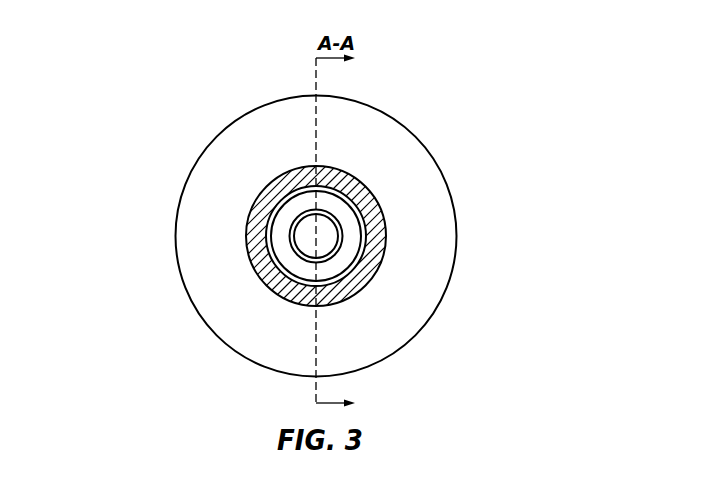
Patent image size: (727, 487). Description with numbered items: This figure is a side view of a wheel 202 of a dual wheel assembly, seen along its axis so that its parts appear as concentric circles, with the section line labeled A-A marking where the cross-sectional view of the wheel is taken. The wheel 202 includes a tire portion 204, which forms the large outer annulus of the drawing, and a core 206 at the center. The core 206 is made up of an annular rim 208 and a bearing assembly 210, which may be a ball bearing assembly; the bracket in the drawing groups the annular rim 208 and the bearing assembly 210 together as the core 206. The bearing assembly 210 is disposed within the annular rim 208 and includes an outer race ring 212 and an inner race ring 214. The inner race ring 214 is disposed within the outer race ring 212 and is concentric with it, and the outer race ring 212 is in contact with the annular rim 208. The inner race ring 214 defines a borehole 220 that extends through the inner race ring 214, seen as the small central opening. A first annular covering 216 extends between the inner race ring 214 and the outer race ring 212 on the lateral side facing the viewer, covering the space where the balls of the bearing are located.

The wheel 202 is at (213, 127).
The tire portion 204 is at (263, 132).
The core 206 is at (82, 217).
The annular rim 208 is at (267, 288).
The bearing assembly 210 is at (263, 233).
The outer race ring 212 is at (358, 270).
The inner race ring 214 is at (345, 245).
The first annular covering 216 is at (325, 200).
The borehole 220 is at (318, 236).